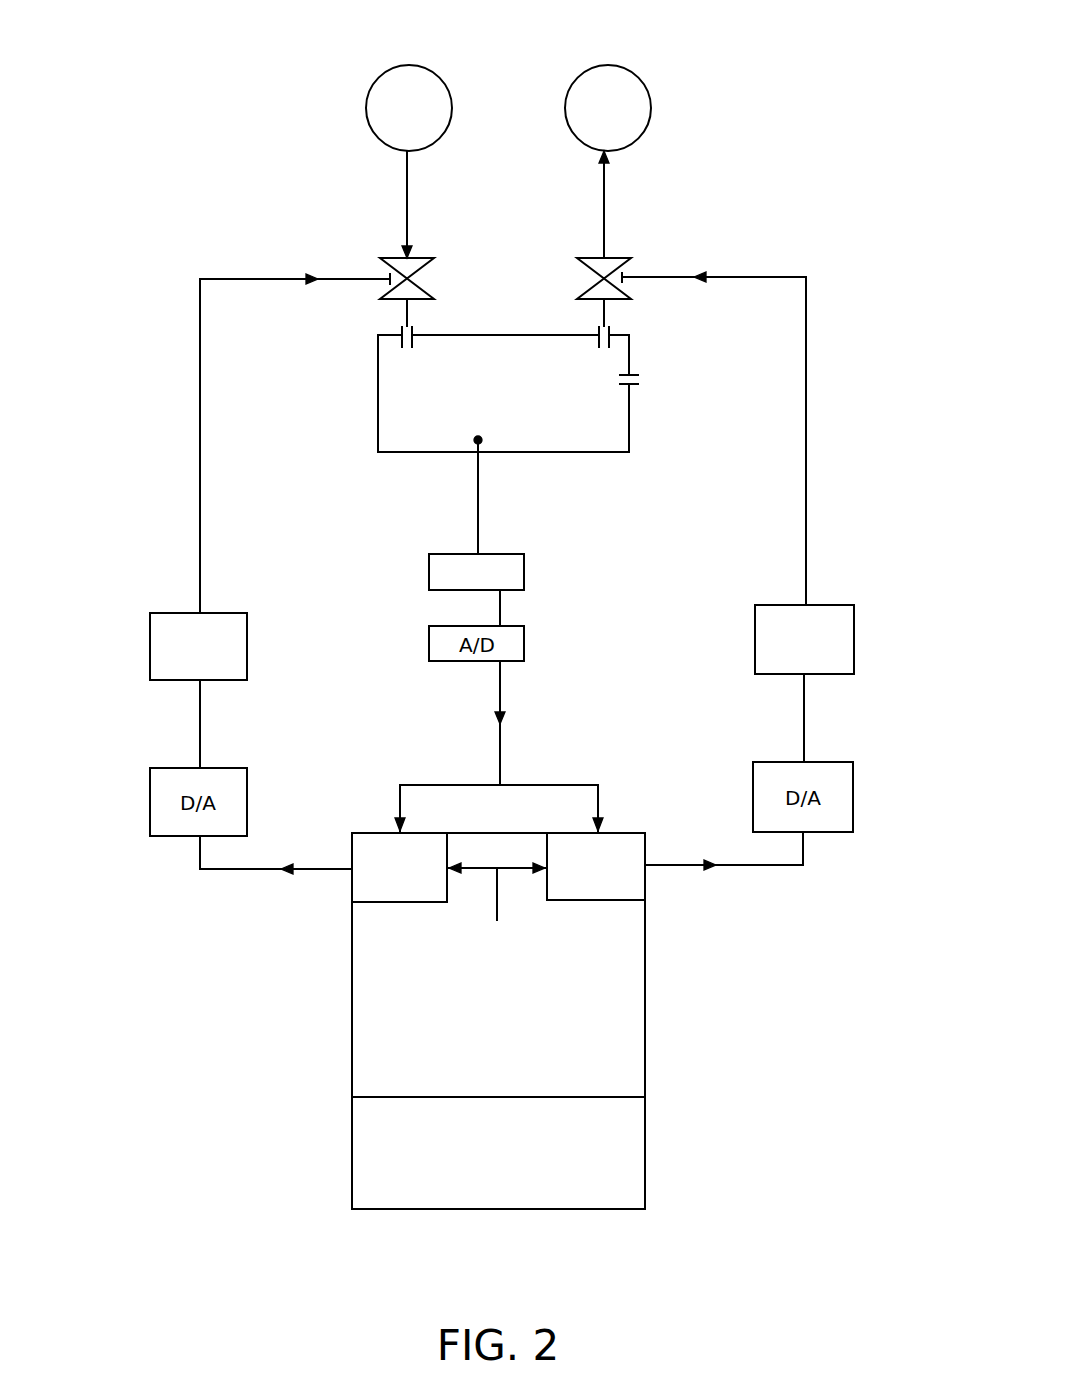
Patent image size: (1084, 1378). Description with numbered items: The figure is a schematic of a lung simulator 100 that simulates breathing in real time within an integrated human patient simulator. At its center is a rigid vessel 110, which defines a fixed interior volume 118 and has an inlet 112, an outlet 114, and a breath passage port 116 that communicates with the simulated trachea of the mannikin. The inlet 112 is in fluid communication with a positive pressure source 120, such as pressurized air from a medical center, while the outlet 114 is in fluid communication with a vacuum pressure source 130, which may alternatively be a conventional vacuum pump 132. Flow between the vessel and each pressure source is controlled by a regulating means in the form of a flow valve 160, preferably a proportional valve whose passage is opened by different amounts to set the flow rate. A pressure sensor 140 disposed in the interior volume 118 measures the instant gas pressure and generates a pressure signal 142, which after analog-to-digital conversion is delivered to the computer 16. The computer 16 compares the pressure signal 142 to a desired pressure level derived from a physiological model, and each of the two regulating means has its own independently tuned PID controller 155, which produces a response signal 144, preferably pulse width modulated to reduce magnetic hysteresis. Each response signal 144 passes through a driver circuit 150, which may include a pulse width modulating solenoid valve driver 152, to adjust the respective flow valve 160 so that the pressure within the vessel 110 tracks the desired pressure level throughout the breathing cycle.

The computer 16 is at (485, 1228).
The lung simulator 100 is at (843, 212).
The vessel 110 is at (578, 453).
The inlet 112 is at (405, 366).
The outlet 114 is at (601, 366).
The breath passage port 116 is at (655, 379).
The interior volume 118 is at (520, 433).
The positive pressure source 120 is at (410, 80).
The vacuum pressure source 130 is at (608, 80).
The vacuum pump 132 is at (638, 92).
The pressure sensor 140 is at (524, 572).
The pressure signal 142 is at (504, 720).
The response signal 144 is at (237, 871).
The driver circuit 150 is at (200, 490).
The pulse width modulating solenoid valve driver 152 is at (150, 645).
The PID controller 155 is at (372, 845).
The flow valve 160 is at (393, 256).